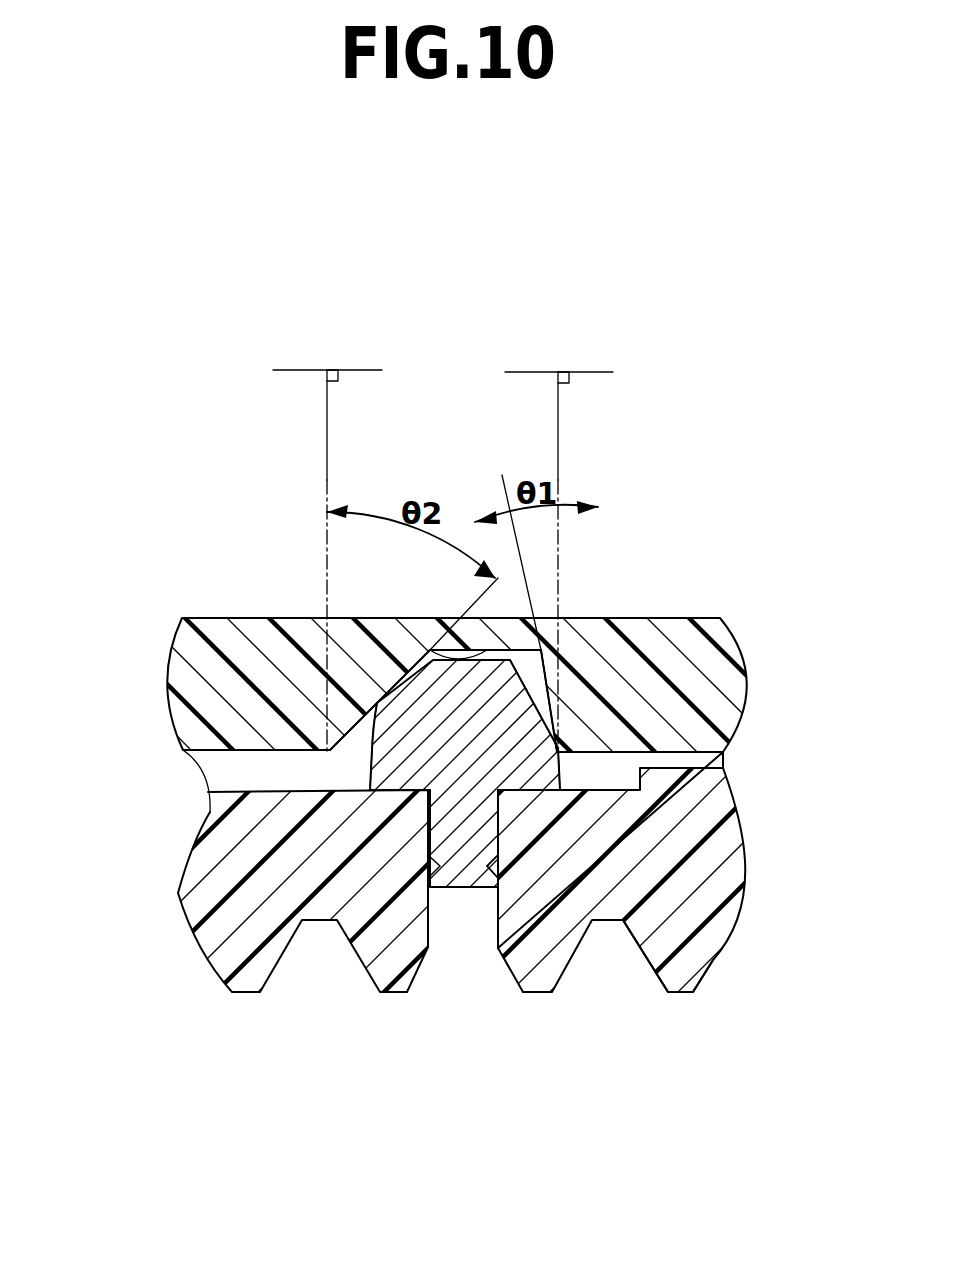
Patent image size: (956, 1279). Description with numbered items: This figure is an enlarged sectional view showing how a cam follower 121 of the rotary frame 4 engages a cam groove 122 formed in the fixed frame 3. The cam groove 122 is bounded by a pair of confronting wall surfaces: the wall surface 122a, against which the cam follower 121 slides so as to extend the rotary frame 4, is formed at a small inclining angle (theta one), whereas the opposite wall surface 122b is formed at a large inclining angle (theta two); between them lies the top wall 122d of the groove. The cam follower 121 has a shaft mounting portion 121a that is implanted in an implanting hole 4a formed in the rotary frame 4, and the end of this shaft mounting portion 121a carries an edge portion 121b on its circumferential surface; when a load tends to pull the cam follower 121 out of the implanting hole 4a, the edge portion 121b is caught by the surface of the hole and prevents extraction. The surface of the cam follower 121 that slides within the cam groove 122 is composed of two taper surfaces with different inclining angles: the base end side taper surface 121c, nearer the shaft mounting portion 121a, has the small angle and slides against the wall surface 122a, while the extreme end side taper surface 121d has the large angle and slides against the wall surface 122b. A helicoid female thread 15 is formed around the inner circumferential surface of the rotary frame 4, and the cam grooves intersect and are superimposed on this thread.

The upper housing member 3 is at (730, 681).
The rotary frame 4 is at (724, 861).
The implanting hole 4a is at (448, 902).
The helicoid female thread 15 is at (702, 960).
The cam follower 121 is at (465, 902).
The shaft mounting portion 121a is at (480, 818).
The edge portion 121b is at (498, 877).
The base end side taper surface 121c is at (378, 722).
The extreme end side taper surface 121d is at (558, 690).
The cam groove 122 is at (362, 743).
The wall surface 122a is at (548, 692).
The wall surface 122b is at (360, 742).
The top wall of groove 122d is at (430, 650).